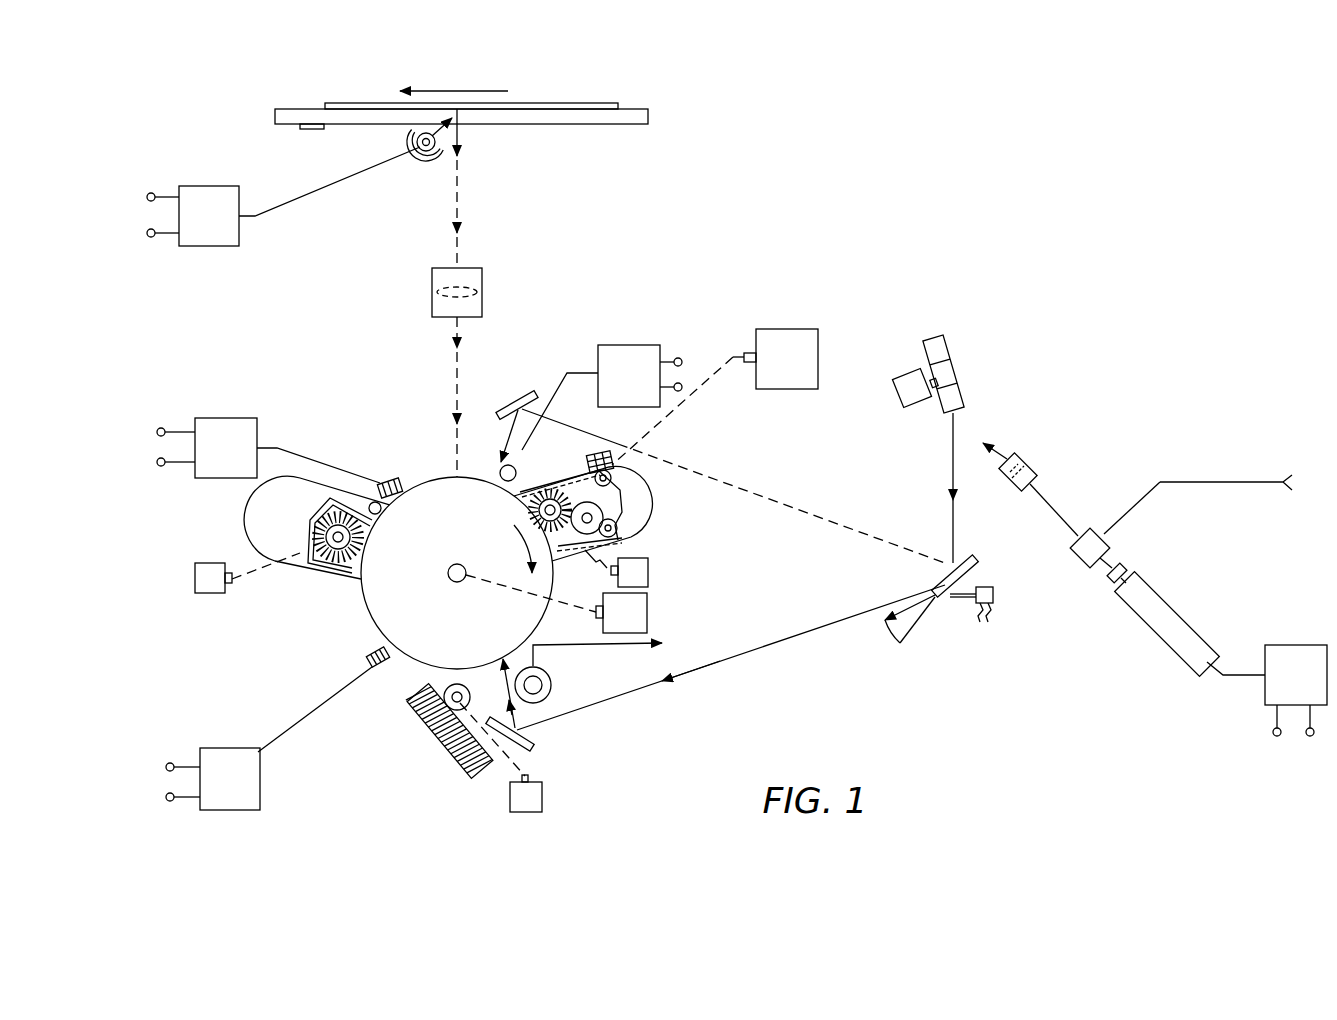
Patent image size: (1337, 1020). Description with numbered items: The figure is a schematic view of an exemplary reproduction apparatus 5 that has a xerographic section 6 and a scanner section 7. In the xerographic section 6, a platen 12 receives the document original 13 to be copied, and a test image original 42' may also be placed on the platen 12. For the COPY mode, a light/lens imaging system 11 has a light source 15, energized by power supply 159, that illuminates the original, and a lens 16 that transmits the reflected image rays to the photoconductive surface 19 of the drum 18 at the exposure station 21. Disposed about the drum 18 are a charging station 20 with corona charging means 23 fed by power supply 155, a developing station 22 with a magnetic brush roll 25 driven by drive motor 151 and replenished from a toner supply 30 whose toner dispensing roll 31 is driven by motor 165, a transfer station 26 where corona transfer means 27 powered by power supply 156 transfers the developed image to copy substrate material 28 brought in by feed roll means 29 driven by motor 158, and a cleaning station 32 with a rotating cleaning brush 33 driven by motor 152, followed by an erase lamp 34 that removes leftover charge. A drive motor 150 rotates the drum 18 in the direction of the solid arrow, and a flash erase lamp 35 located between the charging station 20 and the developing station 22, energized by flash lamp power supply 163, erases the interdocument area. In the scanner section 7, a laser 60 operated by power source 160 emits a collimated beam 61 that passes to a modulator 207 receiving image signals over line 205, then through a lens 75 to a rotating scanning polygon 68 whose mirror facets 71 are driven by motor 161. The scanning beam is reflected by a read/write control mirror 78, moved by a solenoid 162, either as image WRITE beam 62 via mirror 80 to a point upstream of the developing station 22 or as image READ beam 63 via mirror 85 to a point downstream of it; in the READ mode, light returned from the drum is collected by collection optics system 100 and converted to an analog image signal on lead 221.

The reproduction apparatus 5 is at (754, 147).
The xerographic section 6 is at (541, 355).
The scanner section 7 is at (1058, 434).
The light/lens imaging system 11 is at (497, 236).
The platen 12 is at (650, 126).
The document original 13 is at (620, 108).
The light source 15 is at (421, 160).
The lens 16 is at (484, 284).
The drum 18 is at (440, 471).
The photoconductive surface 19 is at (364, 612).
The charging station 20 is at (414, 478).
The exposure station 21 is at (478, 471).
The developing station 22 is at (558, 555).
The corona charging means 23 is at (380, 480).
The magnetic brush roll 25 is at (514, 527).
The transfer station 26 is at (366, 629).
The corona transfer means 27 is at (369, 664).
The copy substrate material 28 is at (428, 688).
The feed roll means 29 is at (465, 684).
The toner supply 30 is at (589, 456).
The toner dispensing roll 31 is at (622, 486).
The cleaning station 32 is at (357, 578).
The cleaning brush 33 is at (312, 531).
The erase lamp 34 is at (381, 512).
The erase lamp 35 is at (519, 470).
The test image original 42' is at (315, 144).
The laser 60 is at (1178, 608).
The collimated beam 61 is at (1122, 566).
The image WRITE beam 62 is at (742, 486).
The image READ beam 63 is at (819, 630).
The rotating scanning polygon 68 is at (957, 346).
The facets 71 is at (962, 384).
The lens 75 is at (1033, 470).
The read/write control mirror 78 is at (965, 563).
The mirror 80 is at (514, 398).
The mirror 85 is at (538, 740).
The collection optics system 100 is at (563, 685).
The drive motor 150 is at (649, 610).
The drive motor 151 is at (650, 572).
The motor 152 is at (222, 596).
The power supply 155 is at (246, 420).
The power supply 156 is at (248, 750).
The motor 158 is at (545, 806).
The power supply 159 is at (208, 186).
The power source 160 is at (1263, 690).
The motor 161 is at (893, 388).
The solenoid 162 is at (995, 587).
The flash lamp power supply 163 is at (612, 400).
The motor 165 is at (816, 330).
The line 205 is at (1238, 470).
The modulator 207 is at (1098, 530).
The lead 221 is at (600, 646).